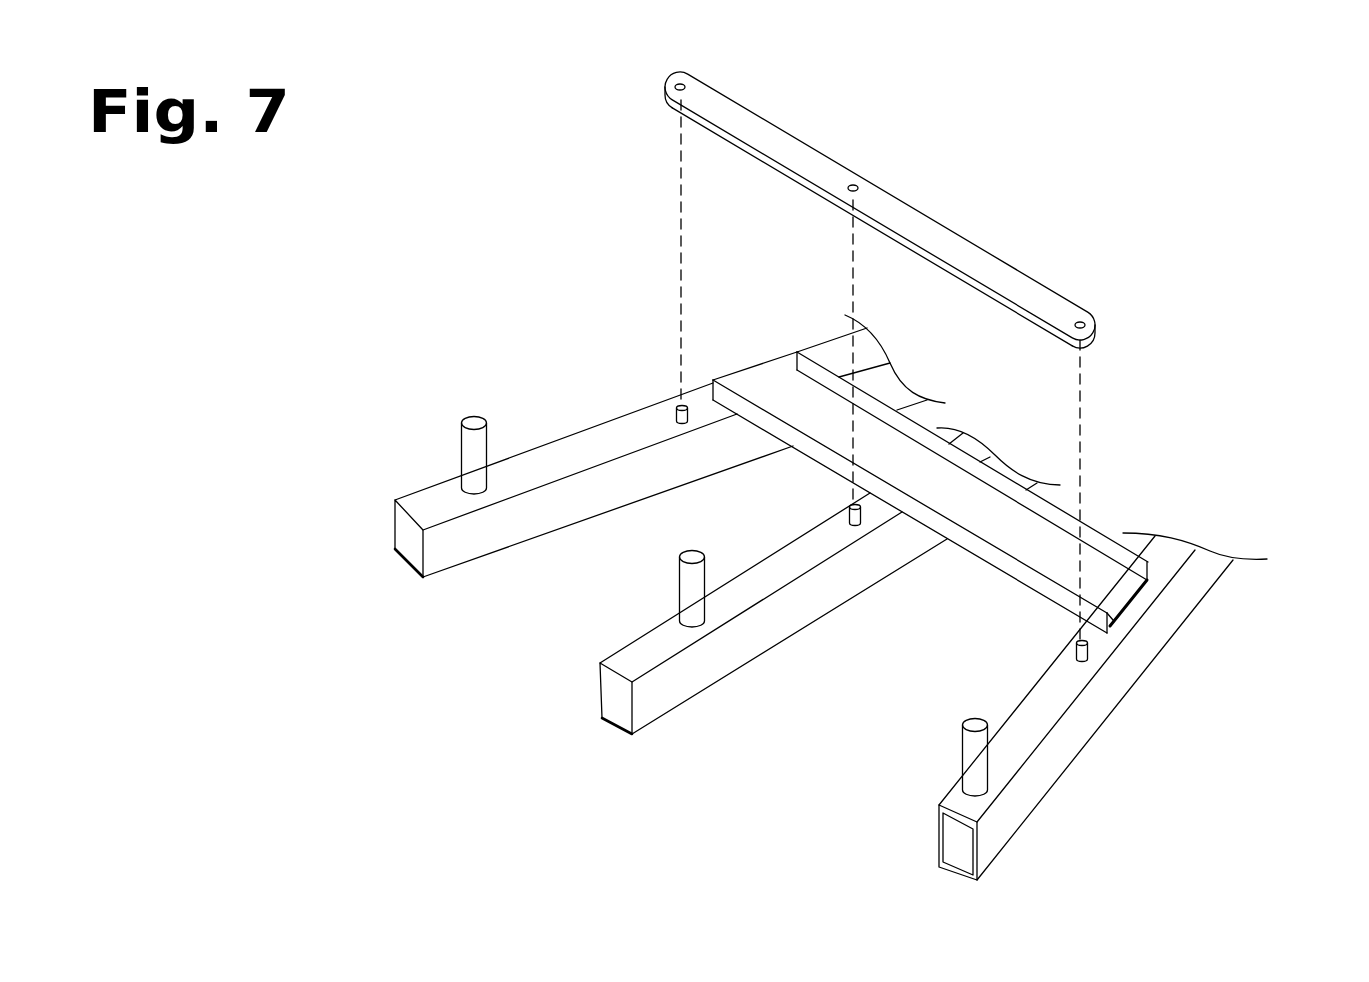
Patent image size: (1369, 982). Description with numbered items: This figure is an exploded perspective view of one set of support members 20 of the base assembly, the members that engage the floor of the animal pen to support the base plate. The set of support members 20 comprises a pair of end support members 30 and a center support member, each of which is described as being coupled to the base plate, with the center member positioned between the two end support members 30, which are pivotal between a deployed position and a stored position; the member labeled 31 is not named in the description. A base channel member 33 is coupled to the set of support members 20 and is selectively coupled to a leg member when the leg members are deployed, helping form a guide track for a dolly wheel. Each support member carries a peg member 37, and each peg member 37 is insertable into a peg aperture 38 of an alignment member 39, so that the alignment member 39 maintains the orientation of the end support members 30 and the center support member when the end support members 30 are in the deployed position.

The set of support members 20 is at (772, 597).
The end support member 30 is at (433, 504).
The center beam 31 is at (642, 653).
The base channel member 33 is at (1100, 580).
The peg member 37 is at (681, 404).
The peg aperture 38 is at (685, 86).
The alignment member 39 is at (980, 346).